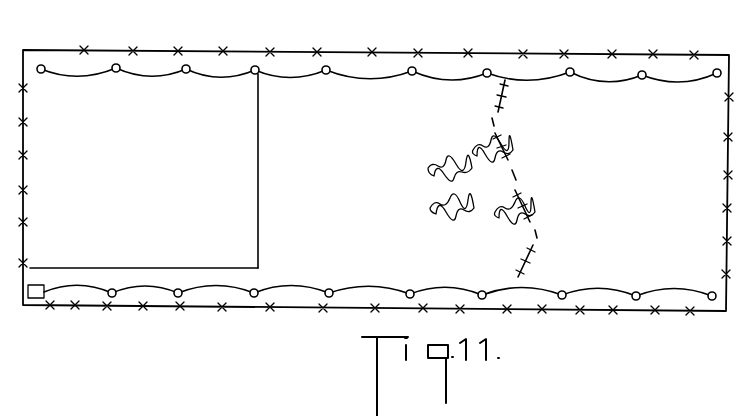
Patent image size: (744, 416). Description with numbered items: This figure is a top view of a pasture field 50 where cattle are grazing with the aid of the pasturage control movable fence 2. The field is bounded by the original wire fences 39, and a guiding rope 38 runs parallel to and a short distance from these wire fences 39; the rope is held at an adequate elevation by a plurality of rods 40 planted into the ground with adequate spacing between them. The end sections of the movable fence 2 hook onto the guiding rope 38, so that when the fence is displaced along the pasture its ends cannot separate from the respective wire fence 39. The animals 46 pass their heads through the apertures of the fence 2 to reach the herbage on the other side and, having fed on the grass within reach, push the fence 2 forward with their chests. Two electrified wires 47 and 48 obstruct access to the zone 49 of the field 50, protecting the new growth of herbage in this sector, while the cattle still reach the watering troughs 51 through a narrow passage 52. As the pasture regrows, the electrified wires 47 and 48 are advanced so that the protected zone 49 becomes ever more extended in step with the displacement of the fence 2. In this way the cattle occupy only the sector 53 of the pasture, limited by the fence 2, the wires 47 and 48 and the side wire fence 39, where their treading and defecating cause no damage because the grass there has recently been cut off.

The movable fence 2 is at (538, 170).
The guiding rope 38 is at (538, 78).
The original wire fences 39 is at (441, 52).
The rods 40 is at (574, 69).
The animals 46 is at (478, 149).
The electrified wire 47 is at (259, 145).
The electrified wire 48 is at (200, 267).
The zone 49 is at (148, 165).
The field 50 is at (650, 204).
The watering troughs 51 is at (46, 283).
The narrow passage 52 is at (162, 284).
The sector 53 is at (368, 184).